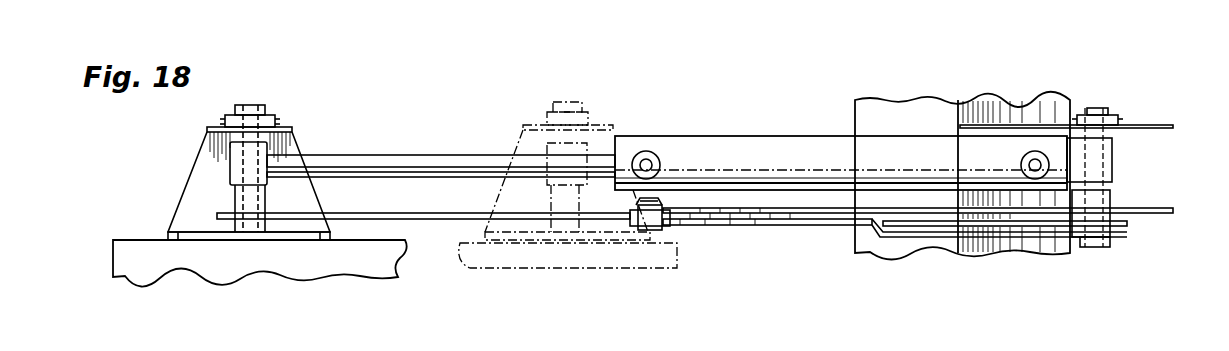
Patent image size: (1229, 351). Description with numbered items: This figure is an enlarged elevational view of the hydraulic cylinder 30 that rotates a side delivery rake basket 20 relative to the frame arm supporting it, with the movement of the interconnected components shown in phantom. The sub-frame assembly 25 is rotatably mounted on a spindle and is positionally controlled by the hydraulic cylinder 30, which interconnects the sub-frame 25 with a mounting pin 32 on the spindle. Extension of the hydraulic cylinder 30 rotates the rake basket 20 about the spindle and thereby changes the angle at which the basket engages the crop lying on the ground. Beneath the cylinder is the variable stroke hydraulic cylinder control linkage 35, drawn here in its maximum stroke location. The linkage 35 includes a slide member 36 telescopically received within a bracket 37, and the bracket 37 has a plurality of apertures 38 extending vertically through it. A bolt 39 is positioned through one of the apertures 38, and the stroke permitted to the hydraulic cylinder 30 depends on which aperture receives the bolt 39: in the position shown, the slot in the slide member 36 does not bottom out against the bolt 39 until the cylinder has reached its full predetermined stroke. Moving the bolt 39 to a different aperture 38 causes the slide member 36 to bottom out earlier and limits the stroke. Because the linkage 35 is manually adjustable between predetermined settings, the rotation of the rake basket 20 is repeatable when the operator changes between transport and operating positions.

The rake basket 20 is at (213, 195).
The sub-frame assembly 25 is at (292, 260).
The hydraulic cylinder 30 is at (763, 147).
The mounting pin 32 is at (1115, 122).
The variable stroke hydraulic cylinder control linkage 35 is at (537, 240).
The slide member 36 is at (405, 257).
The bracket 37 is at (743, 227).
The apertures 38 is at (797, 225).
The bolt 39 is at (653, 203).